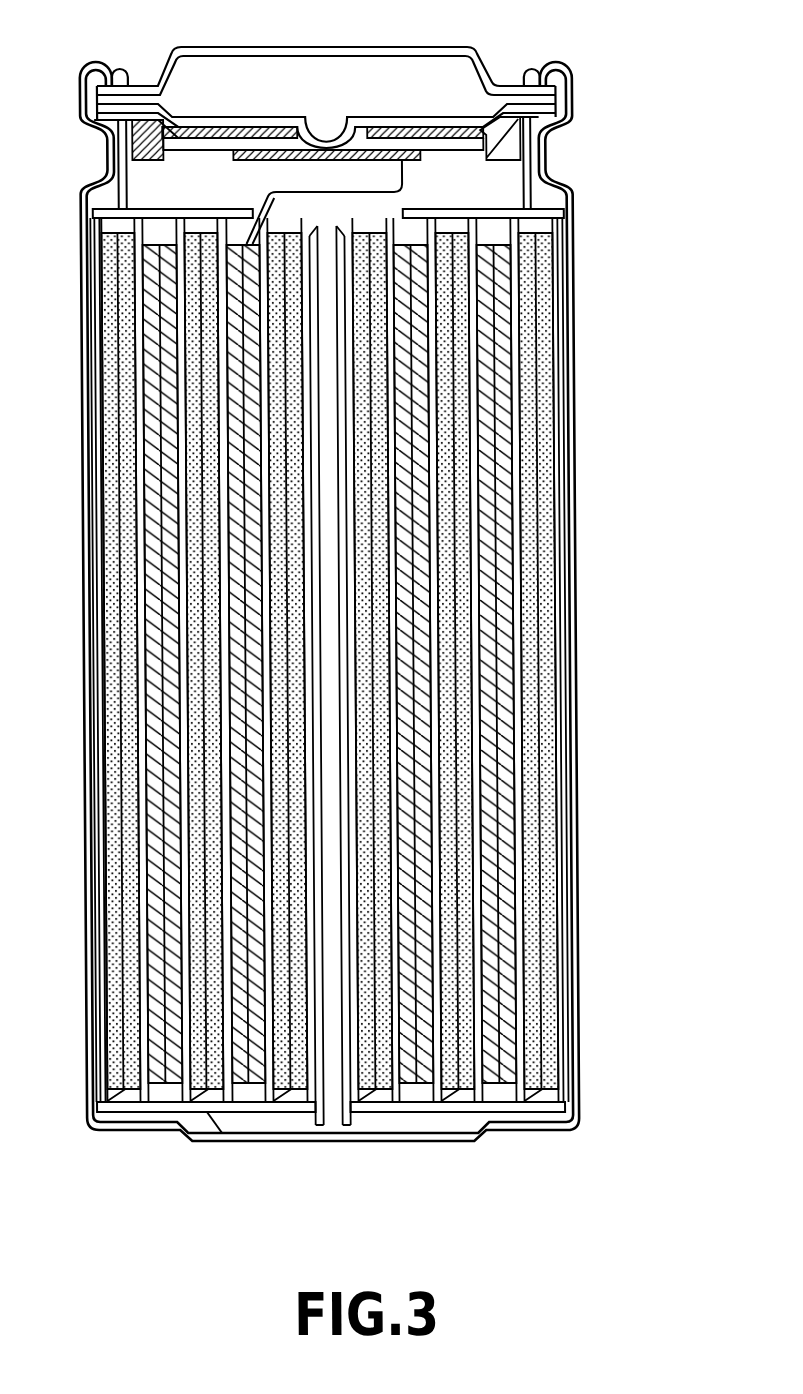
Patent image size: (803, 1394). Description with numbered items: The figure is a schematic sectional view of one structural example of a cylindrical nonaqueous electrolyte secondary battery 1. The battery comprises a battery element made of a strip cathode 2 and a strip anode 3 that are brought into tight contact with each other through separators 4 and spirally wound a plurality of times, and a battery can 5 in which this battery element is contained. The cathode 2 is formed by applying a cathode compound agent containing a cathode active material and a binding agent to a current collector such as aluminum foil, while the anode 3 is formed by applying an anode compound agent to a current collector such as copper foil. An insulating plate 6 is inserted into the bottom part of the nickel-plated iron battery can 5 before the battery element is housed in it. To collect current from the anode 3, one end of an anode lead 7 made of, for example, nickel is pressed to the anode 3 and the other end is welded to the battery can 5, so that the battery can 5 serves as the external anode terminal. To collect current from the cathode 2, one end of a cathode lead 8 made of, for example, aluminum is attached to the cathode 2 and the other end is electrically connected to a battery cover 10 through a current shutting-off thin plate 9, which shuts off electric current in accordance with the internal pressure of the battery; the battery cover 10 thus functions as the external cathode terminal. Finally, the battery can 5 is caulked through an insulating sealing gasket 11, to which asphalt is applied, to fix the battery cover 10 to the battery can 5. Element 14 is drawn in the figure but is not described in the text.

The nonaqueous electrolyte secondary battery 1 is at (620, 62).
The cathode 2 is at (499, 477).
The anode 3 is at (540, 642).
The separators 4 is at (517, 553).
The battery can 5 is at (574, 733).
The insulating plate 6 is at (550, 1102).
The anode lead 7 is at (203, 1112).
The cathode lead 8 is at (407, 176).
The current shutting-off thin plate 9 is at (423, 155).
The battery cover 10 is at (380, 46).
The insulating sealing gasket 11 is at (552, 62).
The PTC element 14 is at (554, 97).